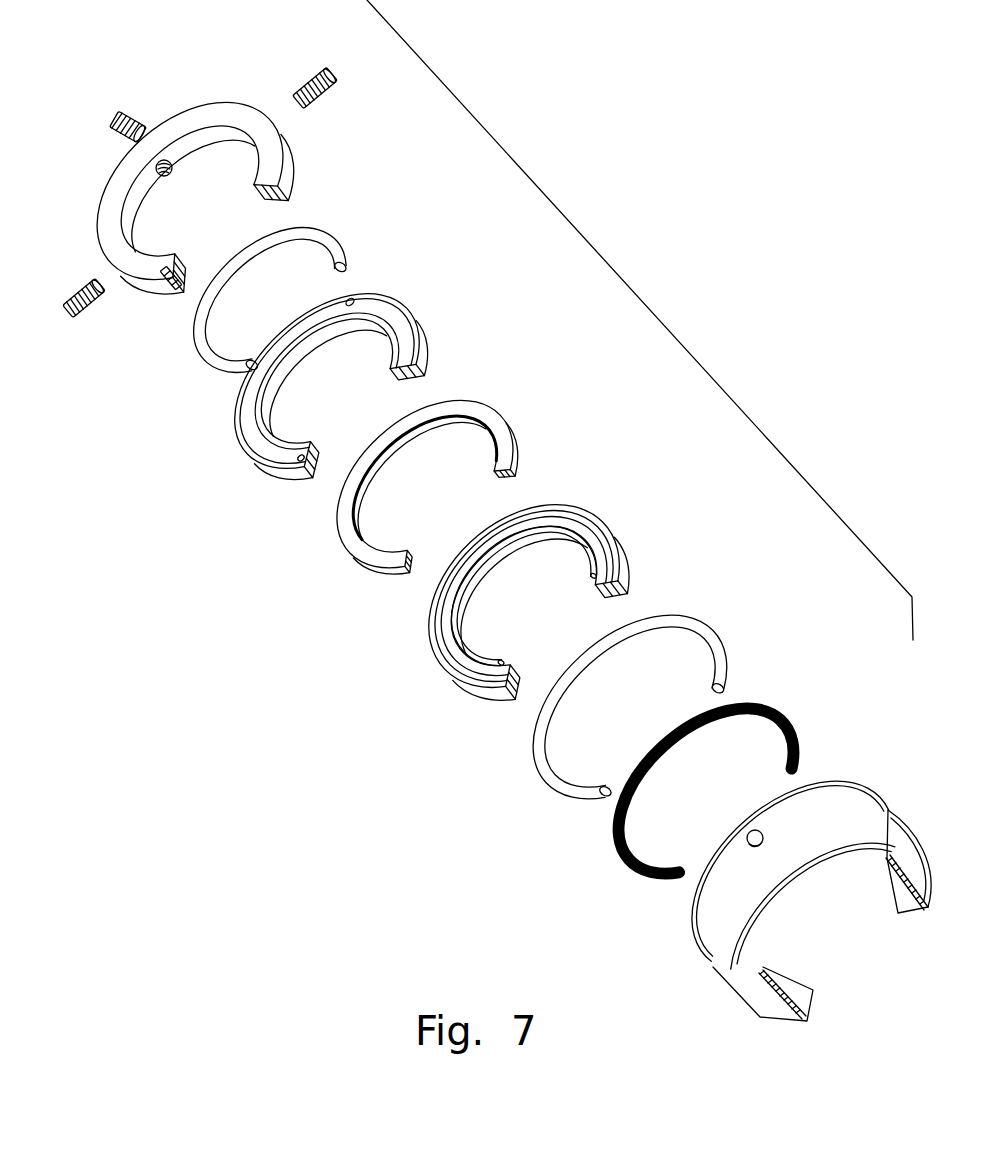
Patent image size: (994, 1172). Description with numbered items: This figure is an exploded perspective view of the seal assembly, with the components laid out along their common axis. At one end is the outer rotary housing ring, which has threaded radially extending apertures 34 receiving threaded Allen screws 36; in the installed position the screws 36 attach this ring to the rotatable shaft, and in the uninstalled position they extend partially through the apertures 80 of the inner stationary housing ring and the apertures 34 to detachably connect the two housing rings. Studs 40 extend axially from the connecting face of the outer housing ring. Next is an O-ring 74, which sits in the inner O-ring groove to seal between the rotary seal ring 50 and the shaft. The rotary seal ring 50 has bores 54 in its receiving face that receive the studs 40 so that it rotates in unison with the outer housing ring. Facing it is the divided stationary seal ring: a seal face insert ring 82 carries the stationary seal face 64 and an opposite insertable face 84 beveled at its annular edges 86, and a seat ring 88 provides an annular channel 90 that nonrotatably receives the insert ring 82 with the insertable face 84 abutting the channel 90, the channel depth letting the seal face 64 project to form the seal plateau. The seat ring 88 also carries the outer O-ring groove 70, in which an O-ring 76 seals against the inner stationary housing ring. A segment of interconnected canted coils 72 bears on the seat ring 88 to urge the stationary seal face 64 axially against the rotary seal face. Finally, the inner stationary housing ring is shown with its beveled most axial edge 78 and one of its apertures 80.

The threaded radially extending apertures 34 is at (172, 168).
The threaded Allen screws 36 is at (313, 67).
The studs 40 is at (173, 290).
The O-ring 74 is at (337, 240).
The rotary seal ring 50 is at (420, 328).
The bores 54 is at (352, 298).
The stationary seal face 64 is at (463, 400).
The seal face insert ring 82 is at (505, 432).
The annular edges 86 is at (508, 465).
The insertable face 84 is at (404, 556).
The seat ring 88 is at (597, 492).
The outer O-ring groove 70 is at (515, 670).
The annular channel 90 is at (462, 625).
The O-ring 76 is at (680, 612).
The canted coils 72 is at (760, 703).
The most axial edge 78 is at (832, 785).
The apertures 80 is at (752, 829).